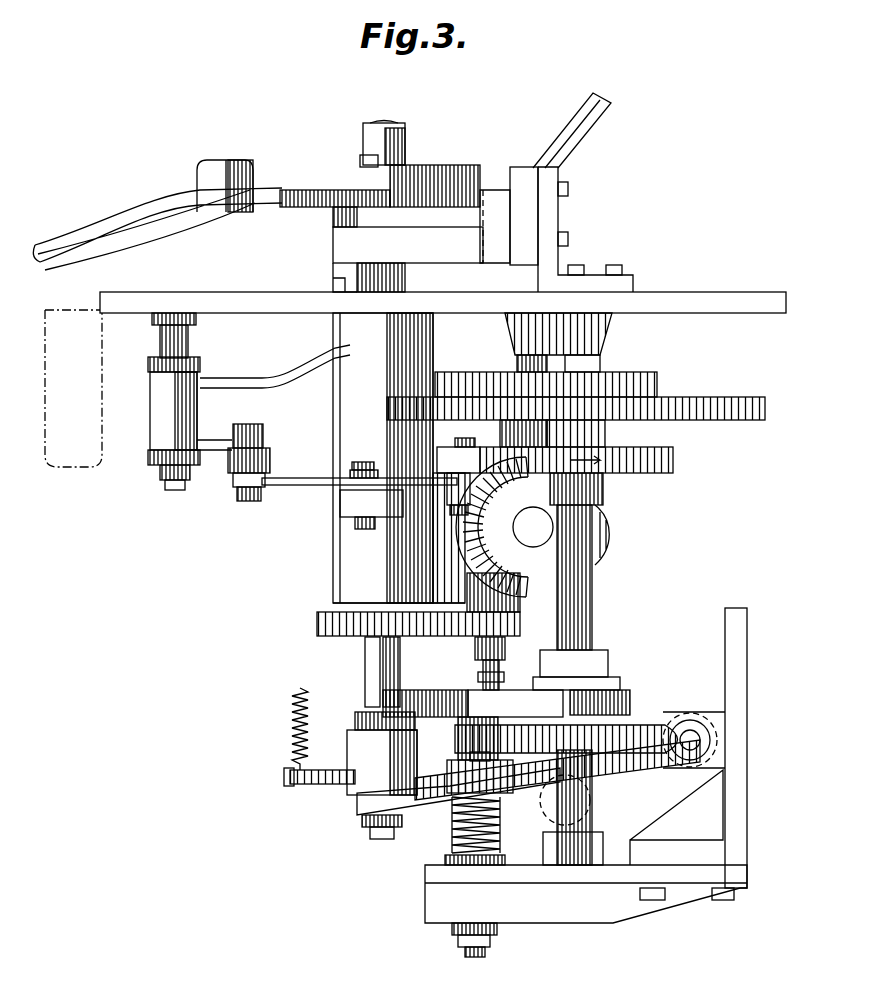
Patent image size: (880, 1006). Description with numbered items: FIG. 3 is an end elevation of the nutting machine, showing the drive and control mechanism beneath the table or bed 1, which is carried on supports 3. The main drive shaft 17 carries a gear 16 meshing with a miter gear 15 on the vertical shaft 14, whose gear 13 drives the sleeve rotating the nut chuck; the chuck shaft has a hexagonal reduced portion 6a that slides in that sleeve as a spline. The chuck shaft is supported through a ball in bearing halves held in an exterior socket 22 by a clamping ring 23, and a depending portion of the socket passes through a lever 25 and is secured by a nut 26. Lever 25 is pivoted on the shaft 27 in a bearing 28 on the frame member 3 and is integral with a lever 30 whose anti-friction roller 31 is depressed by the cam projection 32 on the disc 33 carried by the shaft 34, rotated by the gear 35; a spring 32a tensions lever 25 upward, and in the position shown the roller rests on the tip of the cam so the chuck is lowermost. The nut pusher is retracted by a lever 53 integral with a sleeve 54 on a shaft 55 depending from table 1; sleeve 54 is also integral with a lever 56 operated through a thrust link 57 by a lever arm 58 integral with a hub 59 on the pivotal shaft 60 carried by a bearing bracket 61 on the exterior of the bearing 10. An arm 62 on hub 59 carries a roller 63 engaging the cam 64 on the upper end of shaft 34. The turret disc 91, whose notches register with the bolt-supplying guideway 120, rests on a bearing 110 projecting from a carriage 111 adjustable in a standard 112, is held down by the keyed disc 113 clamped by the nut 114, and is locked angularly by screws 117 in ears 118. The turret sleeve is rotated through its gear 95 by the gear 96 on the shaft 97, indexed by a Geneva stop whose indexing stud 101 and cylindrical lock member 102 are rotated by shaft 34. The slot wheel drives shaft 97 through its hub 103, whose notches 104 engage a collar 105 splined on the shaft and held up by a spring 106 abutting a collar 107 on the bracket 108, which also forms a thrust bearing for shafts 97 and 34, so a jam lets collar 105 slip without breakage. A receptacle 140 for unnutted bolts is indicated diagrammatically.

The table 1 is at (707, 308).
The support 3 is at (737, 652).
The reduced portion of chuck shaft 6a is at (372, 686).
The support 10 is at (408, 340).
The gear 13 is at (458, 382).
The vertical shaft 14 is at (538, 363).
The miter gear 15 is at (550, 480).
The mating gear 16 is at (606, 525).
The main drive shaft 17 is at (542, 528).
The exterior socket 22 is at (360, 775).
The clamping ring 23 is at (362, 722).
The lever 25 is at (357, 805).
The nut 26 is at (368, 830).
The shaft 27 is at (690, 730).
The bearing 28 is at (678, 722).
The lever 30 is at (645, 782).
The anti-friction roller 31 is at (590, 805).
The cam projection 32 is at (533, 790).
The spring 32a is at (298, 720).
The disc 33 is at (620, 728).
The shaft 34 is at (582, 600).
The gear 35 is at (728, 417).
The lever 53 is at (236, 378).
The sleeve 54 is at (163, 412).
The shaft 55 is at (182, 345).
The lever 56 is at (212, 440).
The thrust link 57 is at (232, 462).
The lever arm 58 is at (283, 478).
The hub 59 is at (350, 470).
The pivotal shaft 60 is at (350, 462).
The bearing bracket 61 is at (338, 512).
The arm 62 is at (432, 508).
The anti-friction roller 63 is at (458, 448).
The cam 64 is at (673, 463).
The disc 91 is at (468, 192).
The gear 95 is at (317, 623).
The gear 96 is at (518, 623).
The shaft 97 is at (487, 672).
The indexing stud 101 is at (413, 698).
The cylindrical lock member 102 is at (627, 695).
The hub 103 is at (497, 745).
The notches 104 is at (470, 755).
The collar 105 is at (505, 780).
The spring 106 is at (455, 822).
The collar 107 is at (439, 861).
The bracket 108 is at (438, 877).
The bearing 110 is at (352, 243).
The carriage 111 is at (523, 208).
The standard 112 is at (548, 217).
The disc 113 is at (420, 172).
The nut 114 is at (372, 142).
The screws 117 is at (347, 193).
The ears 118 is at (362, 160).
The bolt supplying guideway 120 is at (575, 128).
The receptacle 140 is at (64, 318).